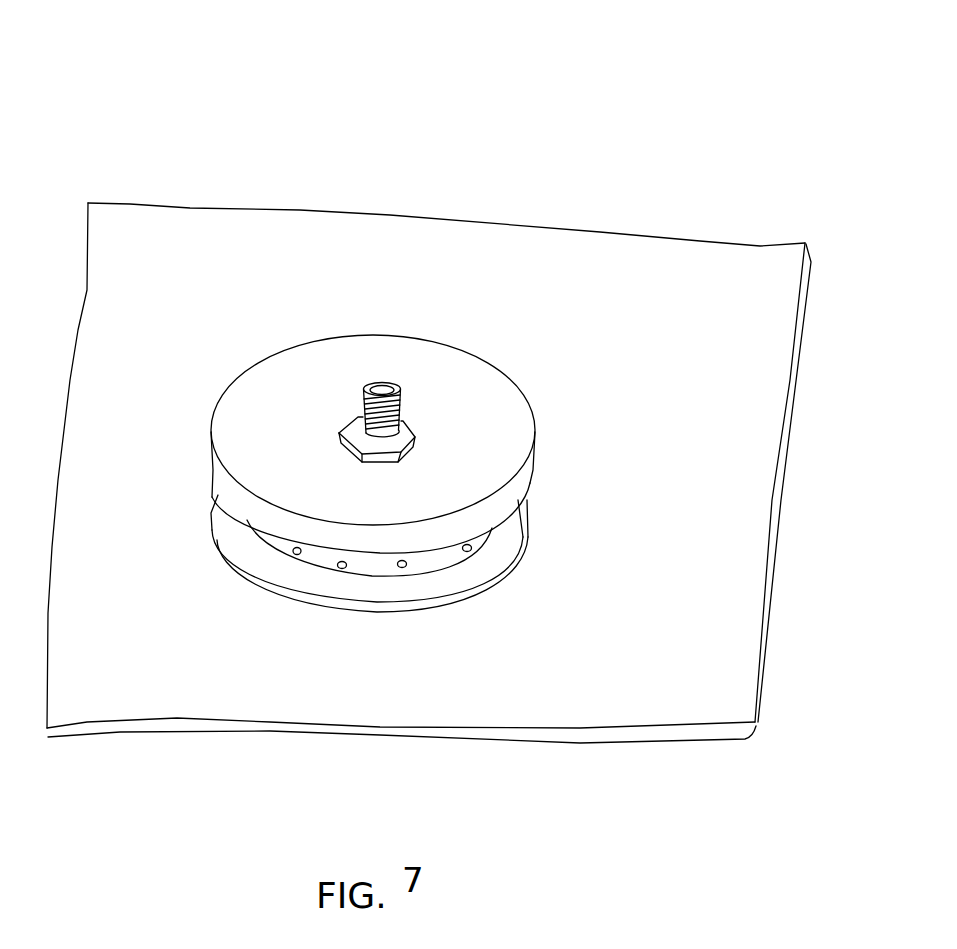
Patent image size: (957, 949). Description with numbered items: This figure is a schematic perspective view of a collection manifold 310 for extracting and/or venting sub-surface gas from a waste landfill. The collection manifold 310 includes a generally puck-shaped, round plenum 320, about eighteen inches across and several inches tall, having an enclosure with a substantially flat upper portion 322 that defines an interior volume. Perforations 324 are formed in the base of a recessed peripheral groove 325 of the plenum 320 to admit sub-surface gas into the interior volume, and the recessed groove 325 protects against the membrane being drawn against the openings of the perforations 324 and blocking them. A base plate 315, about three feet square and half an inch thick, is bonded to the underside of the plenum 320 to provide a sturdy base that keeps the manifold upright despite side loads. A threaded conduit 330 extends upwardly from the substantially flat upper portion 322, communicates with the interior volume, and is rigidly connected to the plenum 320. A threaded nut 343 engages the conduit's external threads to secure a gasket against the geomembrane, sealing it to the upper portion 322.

The collection manifold 310 is at (543, 110).
The base plate 315 is at (602, 692).
The plenum 320 is at (527, 362).
The substantially flat upper portion 322 is at (265, 392).
The recessed peripheral groove 325 is at (528, 497).
The perforations 324 is at (406, 566).
The threaded conduit 330 is at (405, 396).
The threaded nut 343 is at (356, 435).